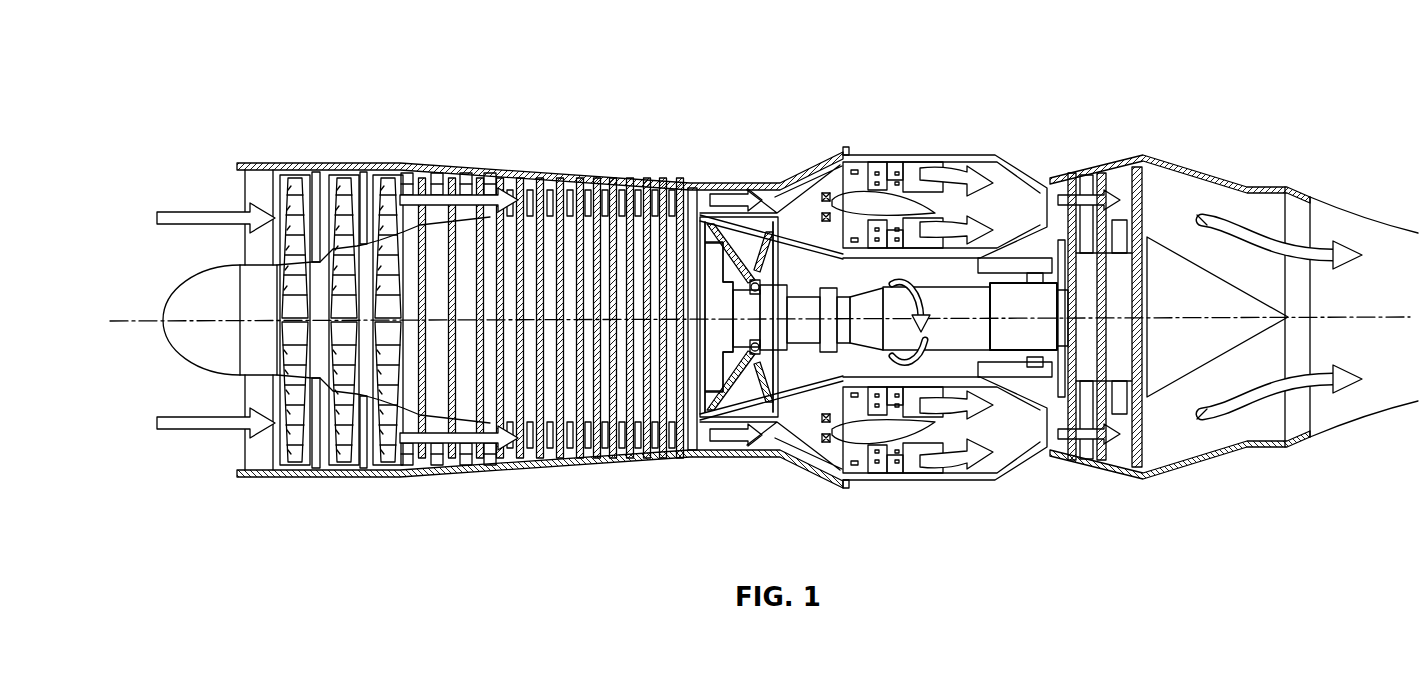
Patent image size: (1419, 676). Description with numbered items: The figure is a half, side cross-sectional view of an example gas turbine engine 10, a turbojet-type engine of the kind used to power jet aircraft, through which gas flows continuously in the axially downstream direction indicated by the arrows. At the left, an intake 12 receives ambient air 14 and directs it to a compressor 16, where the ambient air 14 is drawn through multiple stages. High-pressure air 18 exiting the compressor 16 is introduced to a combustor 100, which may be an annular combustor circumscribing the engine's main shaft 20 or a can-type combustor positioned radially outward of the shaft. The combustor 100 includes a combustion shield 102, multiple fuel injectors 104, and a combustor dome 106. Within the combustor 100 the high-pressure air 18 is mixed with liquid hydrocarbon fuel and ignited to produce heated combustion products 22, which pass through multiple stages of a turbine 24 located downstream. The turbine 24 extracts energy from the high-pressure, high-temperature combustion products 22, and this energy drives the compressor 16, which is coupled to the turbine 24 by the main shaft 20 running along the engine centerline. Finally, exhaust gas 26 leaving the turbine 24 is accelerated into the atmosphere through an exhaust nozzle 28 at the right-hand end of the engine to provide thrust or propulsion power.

The gas turbine engine 10 is at (252, 60).
The intake 12 is at (256, 163).
The ambient air 14 is at (214, 212).
The compressor 16 is at (384, 158).
The high-pressure air 18 is at (735, 200).
The main shaft 20 is at (944, 314).
The combustion products 22 is at (1073, 190).
The turbine 24 is at (1091, 152).
The exhaust gas 26 is at (1317, 253).
The exhaust nozzle 28 is at (1293, 448).
The combustor 100 is at (915, 145).
The combustion shield 102 is at (1007, 450).
The fuel injectors 104 is at (828, 450).
The combustor dome 106 is at (827, 448).